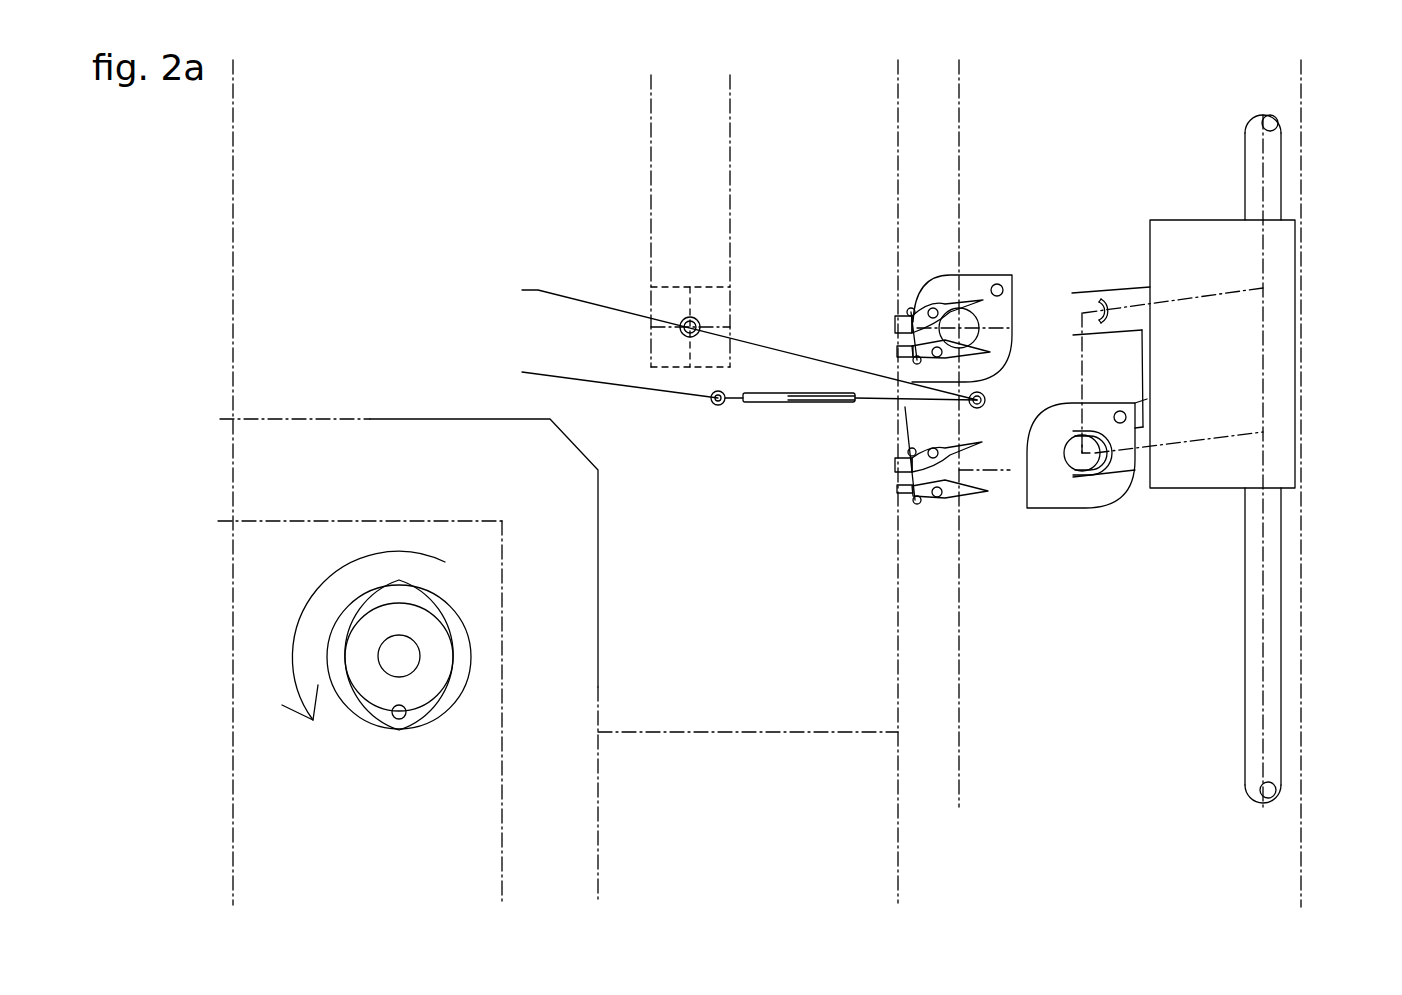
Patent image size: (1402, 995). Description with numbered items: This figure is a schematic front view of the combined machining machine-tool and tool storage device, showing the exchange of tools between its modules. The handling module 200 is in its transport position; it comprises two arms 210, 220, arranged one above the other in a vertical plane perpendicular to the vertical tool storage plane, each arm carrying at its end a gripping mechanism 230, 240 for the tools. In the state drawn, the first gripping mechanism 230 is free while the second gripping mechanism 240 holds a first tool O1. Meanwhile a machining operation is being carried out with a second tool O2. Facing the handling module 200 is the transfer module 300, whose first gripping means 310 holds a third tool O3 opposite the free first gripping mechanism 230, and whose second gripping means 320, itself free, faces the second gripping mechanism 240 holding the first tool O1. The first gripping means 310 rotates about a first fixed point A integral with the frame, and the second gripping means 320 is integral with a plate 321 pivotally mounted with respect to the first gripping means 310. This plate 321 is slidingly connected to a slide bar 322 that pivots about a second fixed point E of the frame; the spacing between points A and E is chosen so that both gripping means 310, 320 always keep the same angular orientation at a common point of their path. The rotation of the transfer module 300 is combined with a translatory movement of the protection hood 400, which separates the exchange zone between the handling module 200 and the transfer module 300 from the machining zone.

The handling module 200 is at (1265, 443).
The arm 210 is at (1174, 203).
The arm 220 is at (1233, 542).
The gripping mechanism 230 is at (1110, 254).
The gripping mechanism 240 is at (1108, 541).
The transfer module 300 is at (717, 221).
The first gripping means 310 is at (917, 283).
The second gripping means 320 is at (907, 506).
The plate 321 is at (871, 451).
The slide bar 322 is at (746, 450).
The protection hood 400 is at (465, 483).
The first fixed point A is at (742, 340).
The second fixed point E is at (612, 381).
The first tool O1 is at (1062, 525).
The second tool O2 is at (399, 733).
The third tool O3 is at (983, 273).